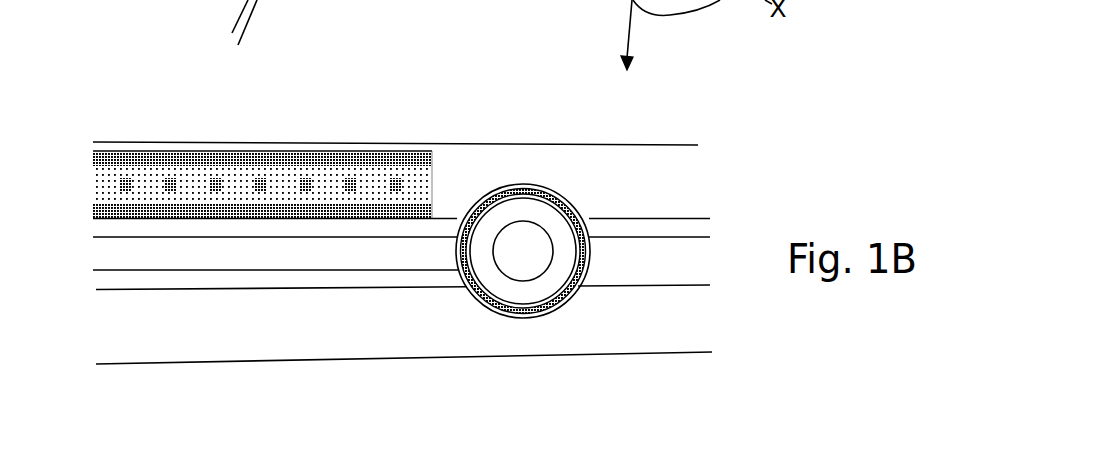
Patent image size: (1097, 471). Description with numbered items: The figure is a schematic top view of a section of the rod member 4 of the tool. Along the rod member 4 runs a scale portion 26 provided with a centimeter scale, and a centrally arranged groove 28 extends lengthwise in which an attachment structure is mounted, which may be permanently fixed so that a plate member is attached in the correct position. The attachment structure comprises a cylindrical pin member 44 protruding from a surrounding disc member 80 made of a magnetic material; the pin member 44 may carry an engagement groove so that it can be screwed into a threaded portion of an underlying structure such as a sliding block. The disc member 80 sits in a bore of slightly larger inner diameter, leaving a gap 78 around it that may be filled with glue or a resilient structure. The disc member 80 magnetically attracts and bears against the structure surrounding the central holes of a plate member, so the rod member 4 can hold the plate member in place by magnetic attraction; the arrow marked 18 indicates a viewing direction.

The rod member 4 is at (467, 160).
The viewing direction 18 is at (588, 35).
The scale portion 26 is at (292, 162).
The groove 28 is at (333, 259).
The pin member 44 is at (522, 235).
The gap 78 is at (568, 290).
The disc member 80 is at (499, 205).